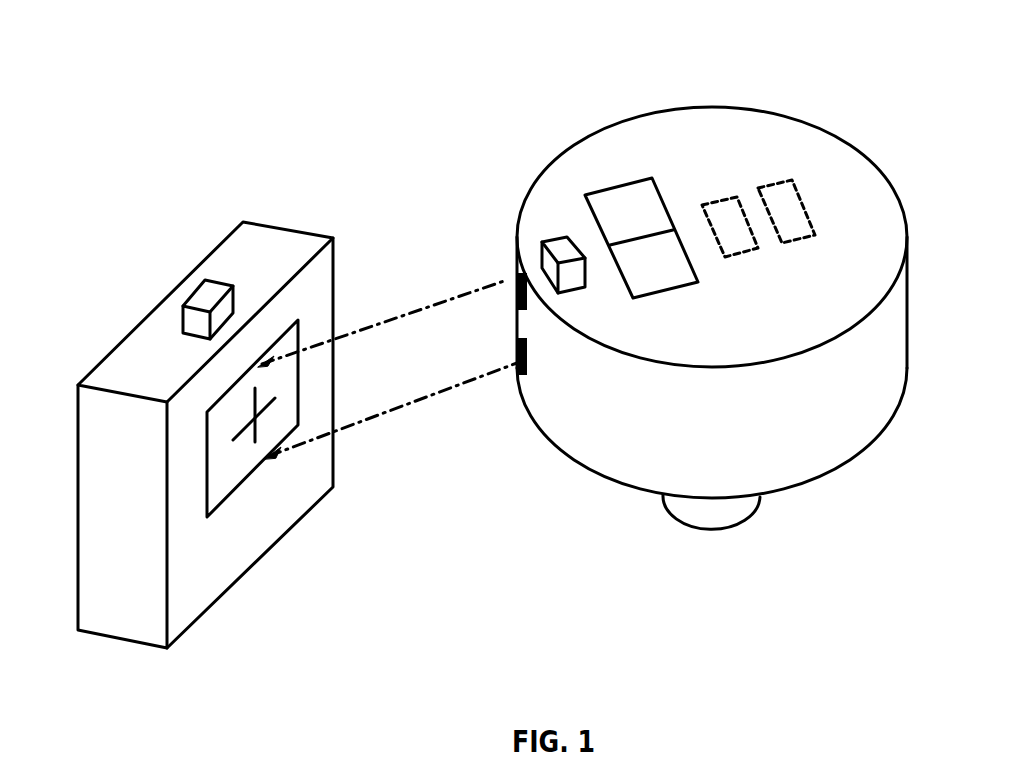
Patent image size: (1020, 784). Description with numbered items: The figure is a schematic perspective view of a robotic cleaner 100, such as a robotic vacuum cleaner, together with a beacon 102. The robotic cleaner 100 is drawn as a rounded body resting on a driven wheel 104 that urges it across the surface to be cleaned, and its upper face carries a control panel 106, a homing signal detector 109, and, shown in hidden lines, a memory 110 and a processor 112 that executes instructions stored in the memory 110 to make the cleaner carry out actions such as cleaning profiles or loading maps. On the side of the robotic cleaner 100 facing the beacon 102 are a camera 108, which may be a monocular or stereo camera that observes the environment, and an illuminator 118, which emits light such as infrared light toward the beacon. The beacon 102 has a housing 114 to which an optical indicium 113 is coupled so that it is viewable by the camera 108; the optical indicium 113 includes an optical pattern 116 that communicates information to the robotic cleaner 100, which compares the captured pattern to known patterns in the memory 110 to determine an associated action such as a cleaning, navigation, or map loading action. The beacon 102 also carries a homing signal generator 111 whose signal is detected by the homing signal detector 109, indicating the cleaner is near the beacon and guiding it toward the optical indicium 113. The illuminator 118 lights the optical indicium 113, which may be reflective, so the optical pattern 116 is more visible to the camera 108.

The robotic cleaner 100 is at (553, 112).
The beacon 102 is at (178, 253).
The driven wheel 104 is at (670, 508).
The control panel 106 is at (657, 295).
The camera 108 is at (518, 285).
The homing signal detector 109 is at (547, 240).
The memory 110 is at (777, 183).
The homing signal generator 111 is at (202, 297).
The processor 112 is at (713, 202).
The optical indicium 113 is at (197, 468).
The housing 114 is at (128, 335).
The optical pattern 116 is at (254, 432).
The illuminator 118 is at (518, 363).